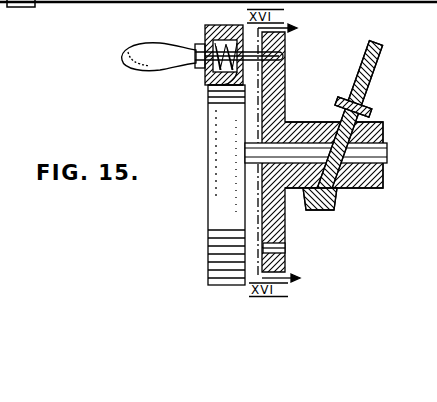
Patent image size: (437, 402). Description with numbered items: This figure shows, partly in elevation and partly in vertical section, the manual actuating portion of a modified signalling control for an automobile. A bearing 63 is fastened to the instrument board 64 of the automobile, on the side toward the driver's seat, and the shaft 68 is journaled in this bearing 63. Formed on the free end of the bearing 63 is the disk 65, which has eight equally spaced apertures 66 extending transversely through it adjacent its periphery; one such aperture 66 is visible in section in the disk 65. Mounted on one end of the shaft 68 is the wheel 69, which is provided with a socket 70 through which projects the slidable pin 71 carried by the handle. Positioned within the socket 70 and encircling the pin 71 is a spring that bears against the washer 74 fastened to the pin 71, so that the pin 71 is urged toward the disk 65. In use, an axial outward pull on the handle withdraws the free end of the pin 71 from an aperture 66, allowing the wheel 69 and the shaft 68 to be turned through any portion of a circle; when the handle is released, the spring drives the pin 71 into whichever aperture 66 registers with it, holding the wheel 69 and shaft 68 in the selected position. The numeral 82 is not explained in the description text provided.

The bearing 63 is at (303, 121).
The instrument board 64 is at (373, 68).
The disk 65 is at (283, 77).
The aperture 66 is at (282, 251).
The shaft 68 is at (388, 150).
The wheel 69 is at (210, 158).
The socket 70 is at (214, 26).
The slidable pin 71 is at (284, 49).
The washer 74 is at (222, 86).
The handle 82 is at (133, 53).